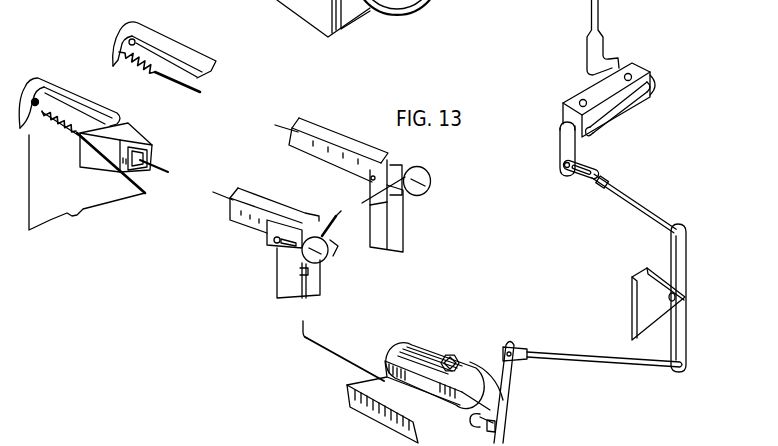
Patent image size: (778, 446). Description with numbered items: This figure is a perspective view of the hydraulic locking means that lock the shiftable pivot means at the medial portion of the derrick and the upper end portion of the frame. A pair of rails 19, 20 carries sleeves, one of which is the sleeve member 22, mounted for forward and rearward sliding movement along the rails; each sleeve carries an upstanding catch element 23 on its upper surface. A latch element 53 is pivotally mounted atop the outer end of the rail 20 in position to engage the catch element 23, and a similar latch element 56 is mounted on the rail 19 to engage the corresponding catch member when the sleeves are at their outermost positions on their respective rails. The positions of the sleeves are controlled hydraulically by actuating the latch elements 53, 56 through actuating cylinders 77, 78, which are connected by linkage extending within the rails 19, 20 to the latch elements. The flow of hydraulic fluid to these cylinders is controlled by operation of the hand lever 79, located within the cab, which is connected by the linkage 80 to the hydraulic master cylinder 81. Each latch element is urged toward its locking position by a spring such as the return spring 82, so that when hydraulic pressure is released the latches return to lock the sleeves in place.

The rail 19 is at (362, 131).
The rail 20 is at (254, 222).
The sleeve member 22 is at (107, 160).
The catch element 23 is at (123, 132).
The latch element 53 is at (77, 103).
The latch element 56 is at (170, 36).
The actuating cylinder 77 is at (328, 260).
The actuating cylinder 78 is at (431, 178).
The hand lever 79 is at (598, 10).
The linkage 80 is at (628, 203).
The hydraulic master cylinder 81 is at (423, 353).
The return spring 82 is at (87, 117).